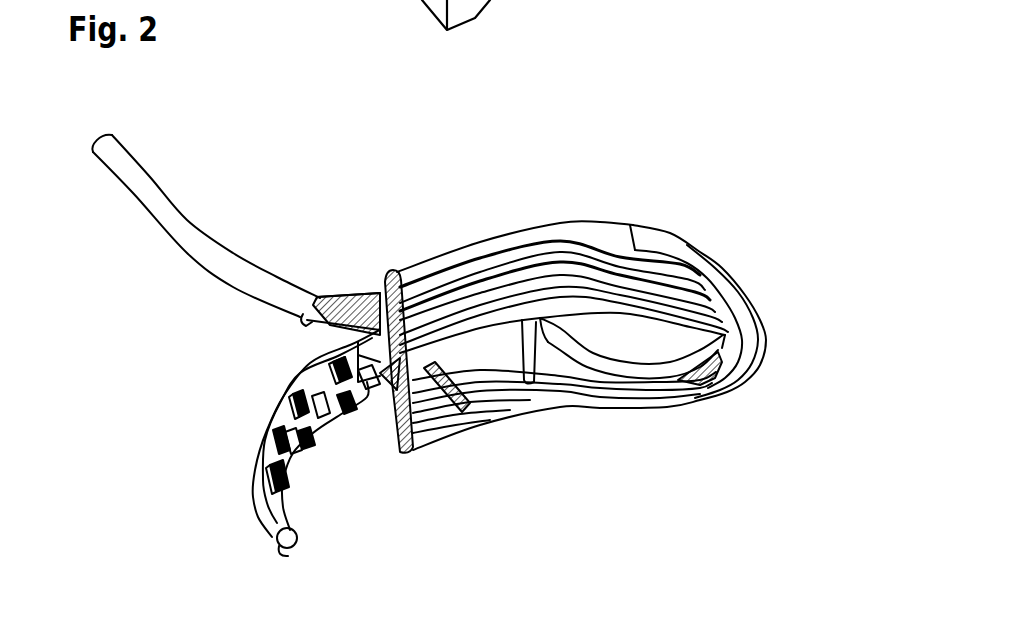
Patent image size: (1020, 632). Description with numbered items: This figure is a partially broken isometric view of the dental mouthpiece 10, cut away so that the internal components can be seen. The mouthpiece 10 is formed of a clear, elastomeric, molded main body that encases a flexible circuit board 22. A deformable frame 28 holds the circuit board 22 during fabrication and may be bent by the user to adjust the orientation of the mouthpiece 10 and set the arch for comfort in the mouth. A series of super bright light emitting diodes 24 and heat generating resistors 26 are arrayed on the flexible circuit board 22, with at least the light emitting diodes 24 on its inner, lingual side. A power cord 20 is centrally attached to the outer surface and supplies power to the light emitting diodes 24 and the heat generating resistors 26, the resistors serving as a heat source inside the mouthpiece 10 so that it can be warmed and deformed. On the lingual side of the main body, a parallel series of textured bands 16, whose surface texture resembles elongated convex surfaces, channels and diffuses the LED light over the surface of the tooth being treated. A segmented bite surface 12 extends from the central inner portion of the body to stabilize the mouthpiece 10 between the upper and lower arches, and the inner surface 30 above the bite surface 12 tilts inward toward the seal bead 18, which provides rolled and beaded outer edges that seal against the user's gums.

The mouthpiece 10 is at (587, 213).
The bite surface 12 is at (467, 372).
The textured bands 16 is at (652, 272).
The seal bead 18 is at (723, 310).
The power cord 20 is at (148, 195).
The flexible circuit board 22 is at (278, 410).
The light emitting diodes 24 is at (323, 407).
The heat generating resistors 26 is at (313, 445).
The deformable frame 28 is at (273, 532).
The inner surface 30 is at (455, 300).